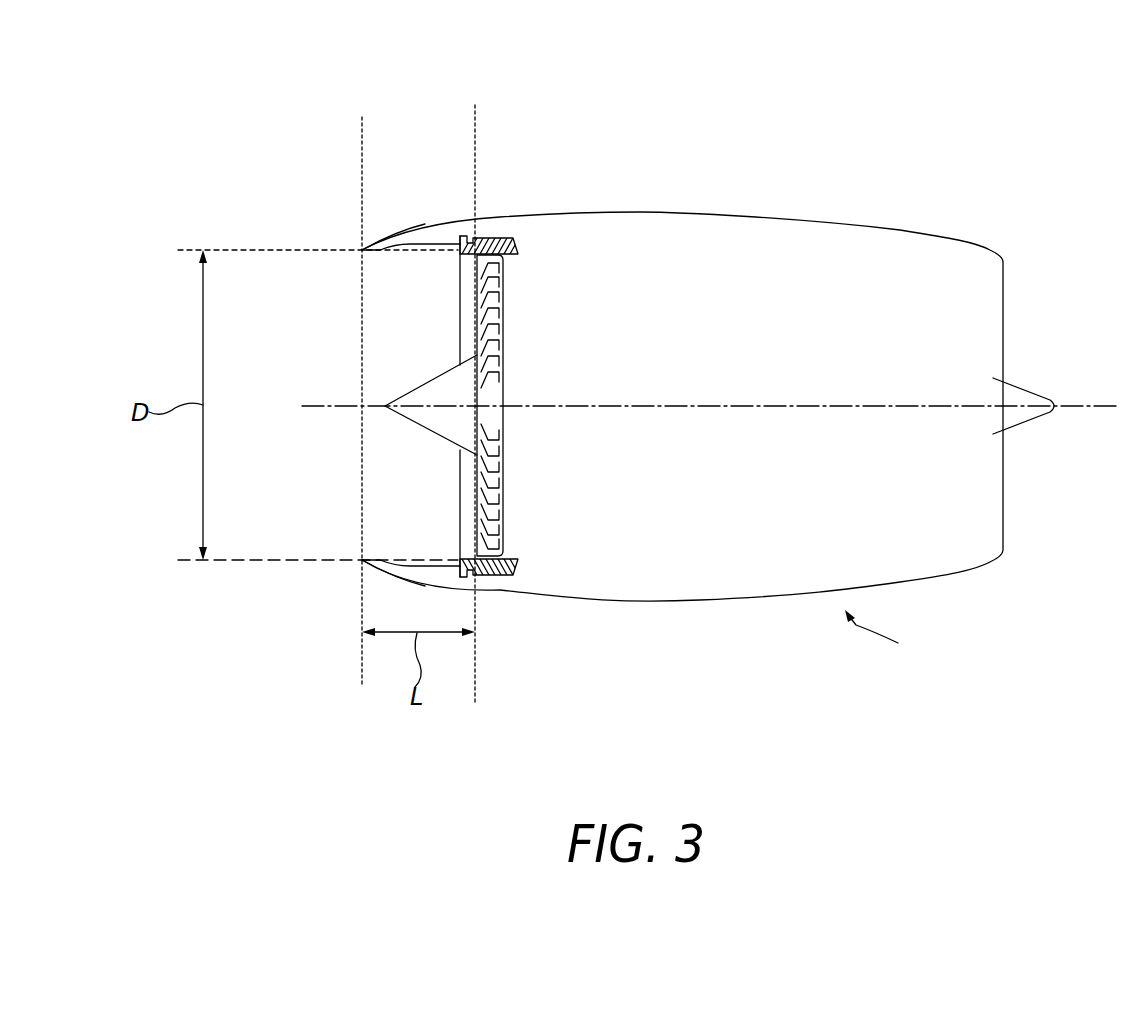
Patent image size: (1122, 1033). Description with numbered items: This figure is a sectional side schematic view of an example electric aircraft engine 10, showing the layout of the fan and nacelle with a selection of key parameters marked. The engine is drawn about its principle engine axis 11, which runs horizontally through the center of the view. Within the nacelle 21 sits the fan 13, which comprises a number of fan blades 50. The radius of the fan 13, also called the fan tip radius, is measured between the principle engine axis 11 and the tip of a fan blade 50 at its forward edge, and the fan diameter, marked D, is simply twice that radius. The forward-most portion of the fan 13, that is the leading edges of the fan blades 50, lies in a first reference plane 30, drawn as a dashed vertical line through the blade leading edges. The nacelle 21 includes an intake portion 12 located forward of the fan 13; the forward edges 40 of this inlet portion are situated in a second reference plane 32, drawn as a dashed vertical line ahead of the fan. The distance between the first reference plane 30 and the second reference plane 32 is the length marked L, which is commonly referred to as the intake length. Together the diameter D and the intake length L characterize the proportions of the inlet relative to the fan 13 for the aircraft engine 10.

The aircraft engine 10 is at (887, 636).
The principle engine axis 11 is at (1077, 407).
The intake portion 12 is at (420, 501).
The fan 13 is at (504, 505).
The nacelle 21 is at (877, 225).
The first reference plane 30 is at (475, 157).
The second reference plane 32 is at (362, 140).
The forward edges 40 is at (362, 250).
The fan blade 50 is at (502, 472).